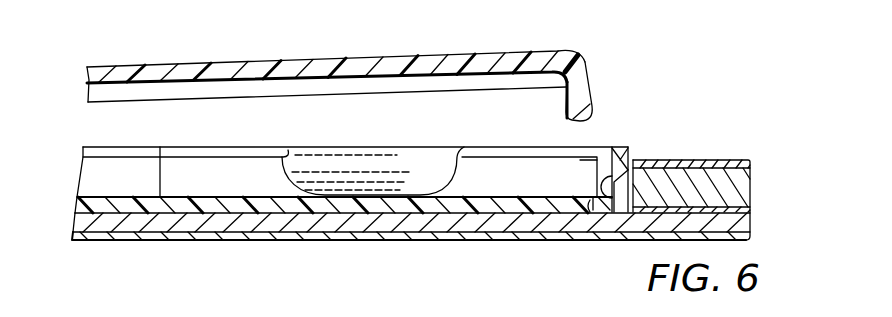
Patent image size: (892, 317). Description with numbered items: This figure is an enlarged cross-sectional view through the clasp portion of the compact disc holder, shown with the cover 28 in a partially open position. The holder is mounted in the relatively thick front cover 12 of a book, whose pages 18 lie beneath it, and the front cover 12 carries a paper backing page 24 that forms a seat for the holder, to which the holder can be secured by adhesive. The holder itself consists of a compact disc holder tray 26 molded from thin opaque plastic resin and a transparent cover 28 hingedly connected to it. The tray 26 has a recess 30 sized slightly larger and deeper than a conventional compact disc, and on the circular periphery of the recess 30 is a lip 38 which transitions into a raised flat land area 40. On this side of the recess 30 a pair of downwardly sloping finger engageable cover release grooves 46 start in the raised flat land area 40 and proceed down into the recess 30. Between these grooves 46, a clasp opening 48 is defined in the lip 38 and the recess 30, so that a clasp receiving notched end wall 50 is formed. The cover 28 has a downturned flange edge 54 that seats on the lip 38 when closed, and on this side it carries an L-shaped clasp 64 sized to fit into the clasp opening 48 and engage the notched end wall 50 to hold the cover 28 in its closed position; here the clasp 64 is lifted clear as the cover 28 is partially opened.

The front cover 12 is at (727, 157).
The pages 18 is at (215, 238).
The paper backing page 24 is at (175, 218).
The compact disc holder tray 26 is at (302, 206).
The cover 28 is at (501, 61).
The recess 30 is at (162, 147).
The lip 38 is at (580, 153).
The raised flat land area 40 is at (200, 147).
The finger engageable cover release grooves 46 is at (385, 177).
The clasp opening 48 is at (591, 203).
The clasp receiving notched end wall 50 is at (632, 158).
The downturned flange edge 54 is at (347, 86).
The L-shaped clasp 64 is at (592, 88).